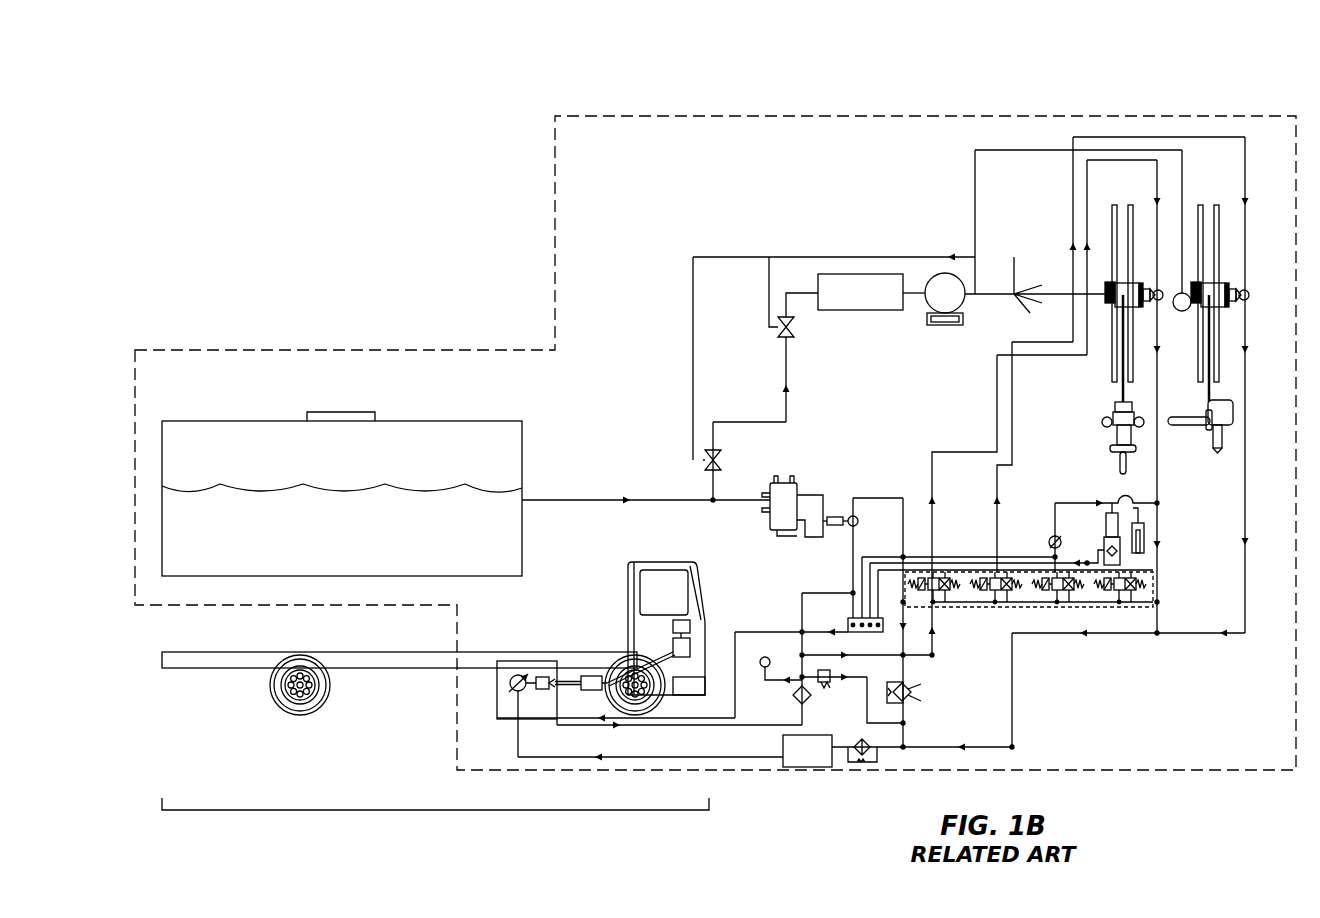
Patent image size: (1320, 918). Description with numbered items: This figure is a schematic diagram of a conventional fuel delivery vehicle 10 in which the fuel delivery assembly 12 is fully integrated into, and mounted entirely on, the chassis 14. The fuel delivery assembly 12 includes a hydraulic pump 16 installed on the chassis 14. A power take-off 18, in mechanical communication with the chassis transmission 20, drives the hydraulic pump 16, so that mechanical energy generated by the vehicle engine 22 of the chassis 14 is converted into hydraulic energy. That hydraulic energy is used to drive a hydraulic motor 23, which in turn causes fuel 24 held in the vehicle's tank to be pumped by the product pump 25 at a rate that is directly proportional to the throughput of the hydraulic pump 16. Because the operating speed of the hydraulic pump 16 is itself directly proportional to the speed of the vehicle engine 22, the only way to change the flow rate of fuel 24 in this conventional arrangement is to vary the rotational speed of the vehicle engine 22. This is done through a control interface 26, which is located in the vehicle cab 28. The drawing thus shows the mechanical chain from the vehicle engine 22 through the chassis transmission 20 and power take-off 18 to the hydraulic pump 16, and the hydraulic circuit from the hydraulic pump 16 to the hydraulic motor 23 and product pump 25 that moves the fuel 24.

The fuel delivery vehicle 10 is at (462, 812).
The fuel delivery assembly 12 is at (776, 106).
The chassis 14 is at (607, 650).
The hydraulic pump 16 is at (516, 672).
The power take-off 18 is at (552, 685).
The chassis transmission 20 is at (594, 675).
The vehicle engine 22 is at (690, 645).
The hydraulic motor 23 is at (858, 520).
The fuel 24 is at (456, 535).
The product pump 25 is at (800, 487).
The control interface 26 is at (672, 626).
The vehicle cab 28 is at (651, 600).